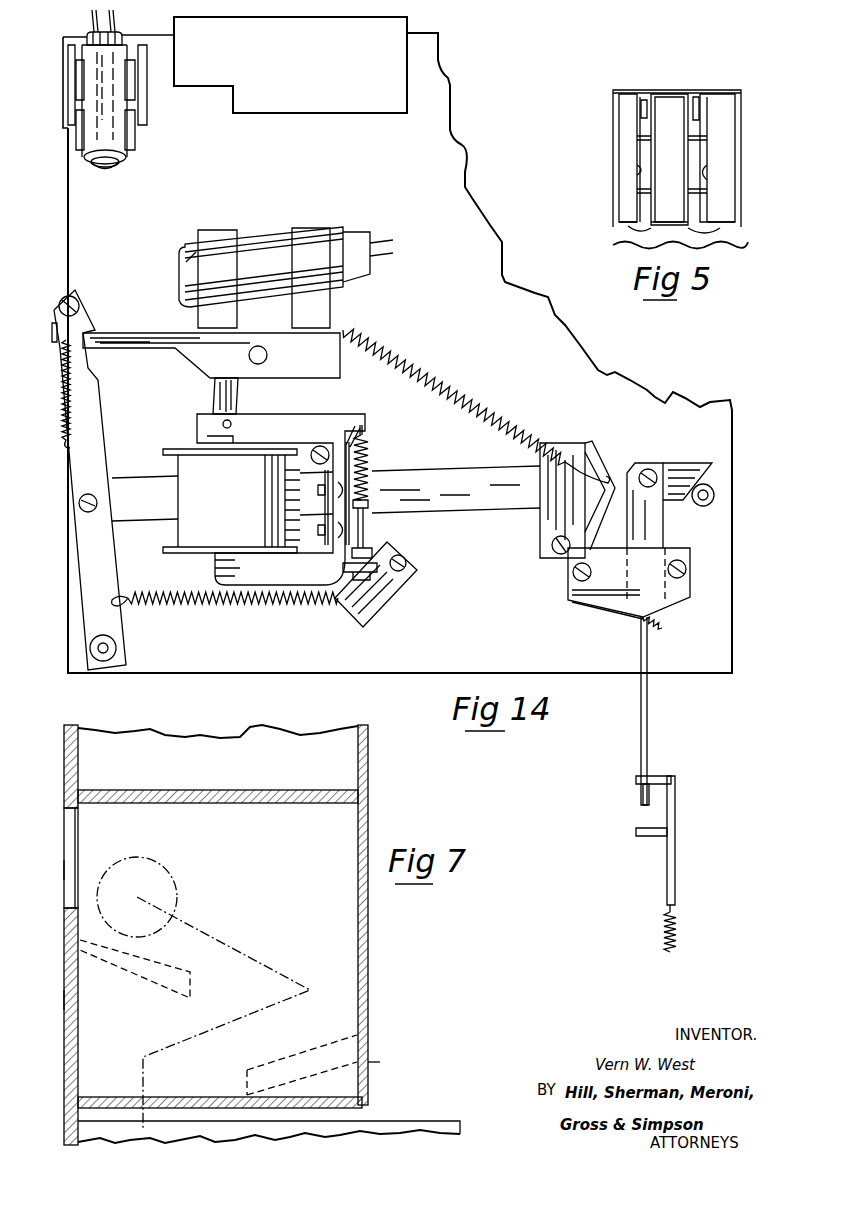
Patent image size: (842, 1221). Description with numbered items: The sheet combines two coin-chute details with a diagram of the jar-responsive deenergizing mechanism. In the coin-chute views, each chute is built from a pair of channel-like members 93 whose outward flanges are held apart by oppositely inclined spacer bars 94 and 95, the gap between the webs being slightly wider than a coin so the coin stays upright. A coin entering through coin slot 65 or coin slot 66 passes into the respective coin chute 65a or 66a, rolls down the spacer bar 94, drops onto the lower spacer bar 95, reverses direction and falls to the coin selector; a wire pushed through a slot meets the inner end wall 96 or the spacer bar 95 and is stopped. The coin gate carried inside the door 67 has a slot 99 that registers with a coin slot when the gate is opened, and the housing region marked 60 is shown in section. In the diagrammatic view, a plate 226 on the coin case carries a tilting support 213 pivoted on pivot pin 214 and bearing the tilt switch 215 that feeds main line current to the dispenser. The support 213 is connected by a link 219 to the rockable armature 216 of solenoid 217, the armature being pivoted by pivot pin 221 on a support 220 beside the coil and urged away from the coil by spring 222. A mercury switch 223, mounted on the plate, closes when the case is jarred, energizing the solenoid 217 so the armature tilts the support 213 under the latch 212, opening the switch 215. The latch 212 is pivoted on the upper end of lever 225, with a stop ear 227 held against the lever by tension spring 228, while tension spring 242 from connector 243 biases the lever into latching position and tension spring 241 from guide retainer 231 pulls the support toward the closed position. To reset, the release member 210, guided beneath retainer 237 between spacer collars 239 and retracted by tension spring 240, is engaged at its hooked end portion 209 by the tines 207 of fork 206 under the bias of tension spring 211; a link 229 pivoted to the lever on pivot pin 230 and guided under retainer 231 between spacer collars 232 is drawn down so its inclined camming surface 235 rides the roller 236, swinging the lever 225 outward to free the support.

In FIG. 14, the switch 223 is at (112, 170).
In FIG. 14, the tilt switch 215 is at (240, 245).
In FIG. 14, the tilting support 213 is at (155, 336).
In FIG. 14, the pivot pin 214 is at (258, 364).
In FIG. 14, the latch 212 is at (88, 318).
In FIG. 14, the lever 225 is at (102, 437).
In FIG. 14, the stop ear 227 is at (80, 333).
In FIG. 14, the tension spring 228 is at (62, 416).
In FIG. 14, the pivot pin 230 is at (79, 505).
In FIG. 14, the link 229 is at (455, 471).
In FIG. 14, the solenoid 217 is at (185, 531).
In FIG. 14, the armature 216 is at (316, 416).
In FIG. 14, the link 219 is at (215, 400).
In FIG. 14, the pivot pin 221 is at (322, 447).
In FIG. 14, the support 220 is at (343, 481).
In FIG. 14, the spring 222 is at (369, 456).
In FIG. 14, the connector 243 is at (350, 622).
In FIG. 14, the tension spring 242 is at (233, 606).
In FIG. 14, the tension spring 241 is at (430, 381).
In FIG. 14, the guide retainer 231 is at (540, 528).
In FIG. 14, the spacer collars 232 is at (566, 443).
In FIG. 14, the inclined camming surface 235 is at (712, 470).
In FIG. 14, the roller 236 is at (699, 505).
In FIG. 14, the plate 226 is at (732, 540).
In FIG. 14, the retainer 237 is at (608, 611).
In FIG. 14, the spacer collars 239 is at (575, 577).
In FIG. 14, the tension spring 240 is at (661, 624).
In FIG. 14, the release member 210 is at (648, 722).
In FIG. 14, the tines 207 is at (640, 828).
In FIG. 14, the hooked end portion 209 is at (650, 793).
In FIG. 14, the fork 206 is at (675, 810).
In FIG. 14, the tension spring 211 is at (677, 930).
In FIG. 5, the coin slot 65 is at (640, 110).
In FIG. 5, the coin slot 66 is at (700, 110).
In FIG. 7, the coin slot 66 is at (64, 870).
In FIG. 5, the spacer bar 94 is at (645, 140).
In FIG. 7, the spacer bar 94 is at (162, 986).
In FIG. 5, the coin chute 65a is at (640, 170).
In FIG. 5, the coin chute 66a is at (712, 178).
In FIG. 5, the spacer bar 95 is at (645, 189).
In FIG. 7, the spacer bar 95 is at (277, 1062).
In FIG. 5, the channel-like members 93 is at (628, 226).
In FIG. 7, the channel-like members 93 is at (240, 803).
In FIG. 7, the inner end wall 96 is at (80, 776).
In FIG. 7, the slot 99 is at (78, 846).
In FIG. 7, the housing 60 is at (309, 849).
In FIG. 7, the door 67 is at (64, 998).